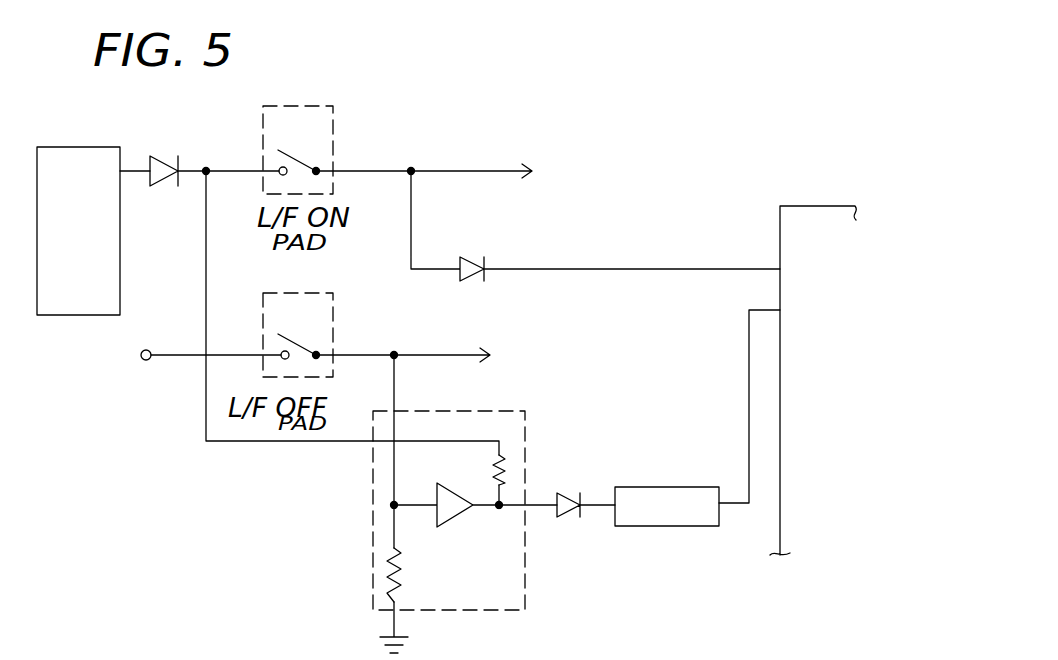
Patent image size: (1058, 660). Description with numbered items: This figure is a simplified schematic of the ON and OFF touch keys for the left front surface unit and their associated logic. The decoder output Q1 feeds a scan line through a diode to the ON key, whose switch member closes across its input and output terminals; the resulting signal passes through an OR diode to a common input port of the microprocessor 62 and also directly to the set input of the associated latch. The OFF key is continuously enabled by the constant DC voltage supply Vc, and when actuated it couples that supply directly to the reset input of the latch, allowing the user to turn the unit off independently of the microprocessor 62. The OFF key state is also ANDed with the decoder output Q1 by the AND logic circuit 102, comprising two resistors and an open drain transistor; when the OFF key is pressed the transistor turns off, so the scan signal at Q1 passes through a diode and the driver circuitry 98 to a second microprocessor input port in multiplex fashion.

The microprocessor 62 is at (780, 222).
The driver circuitry 98 is at (700, 526).
The AND logic circuit 102 is at (527, 608).
The decoder output Q1 is at (78, 231).
The constant DC voltage supply Vc is at (190, 357).